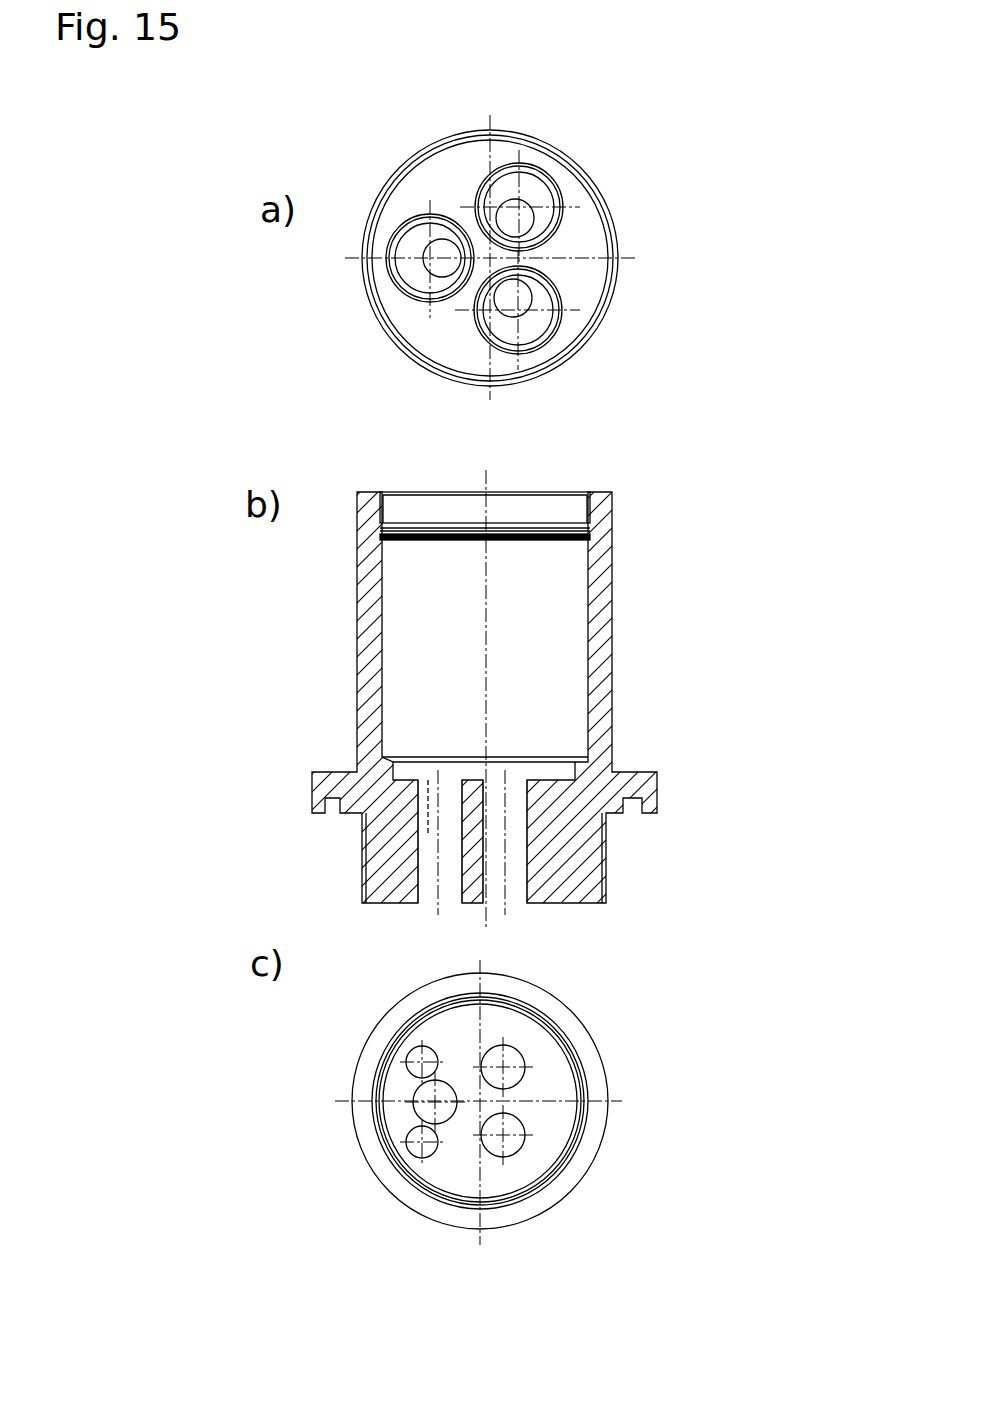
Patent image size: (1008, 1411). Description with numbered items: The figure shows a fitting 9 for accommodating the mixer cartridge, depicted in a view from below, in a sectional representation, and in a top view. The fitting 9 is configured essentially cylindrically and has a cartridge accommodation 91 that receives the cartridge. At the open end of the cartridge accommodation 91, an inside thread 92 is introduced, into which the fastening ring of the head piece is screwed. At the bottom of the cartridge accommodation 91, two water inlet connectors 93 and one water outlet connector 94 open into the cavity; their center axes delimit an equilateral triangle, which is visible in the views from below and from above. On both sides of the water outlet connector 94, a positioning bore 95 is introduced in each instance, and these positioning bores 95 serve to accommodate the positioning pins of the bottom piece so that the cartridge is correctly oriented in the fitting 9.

The fitting 9 is at (678, 171).
The cartridge accommodation 91 is at (388, 648).
The inside thread 92 is at (378, 512).
The water inlet connectors 93 is at (535, 190).
The water outlet connector 94 is at (418, 279).
The positioning bore 95 is at (410, 808).